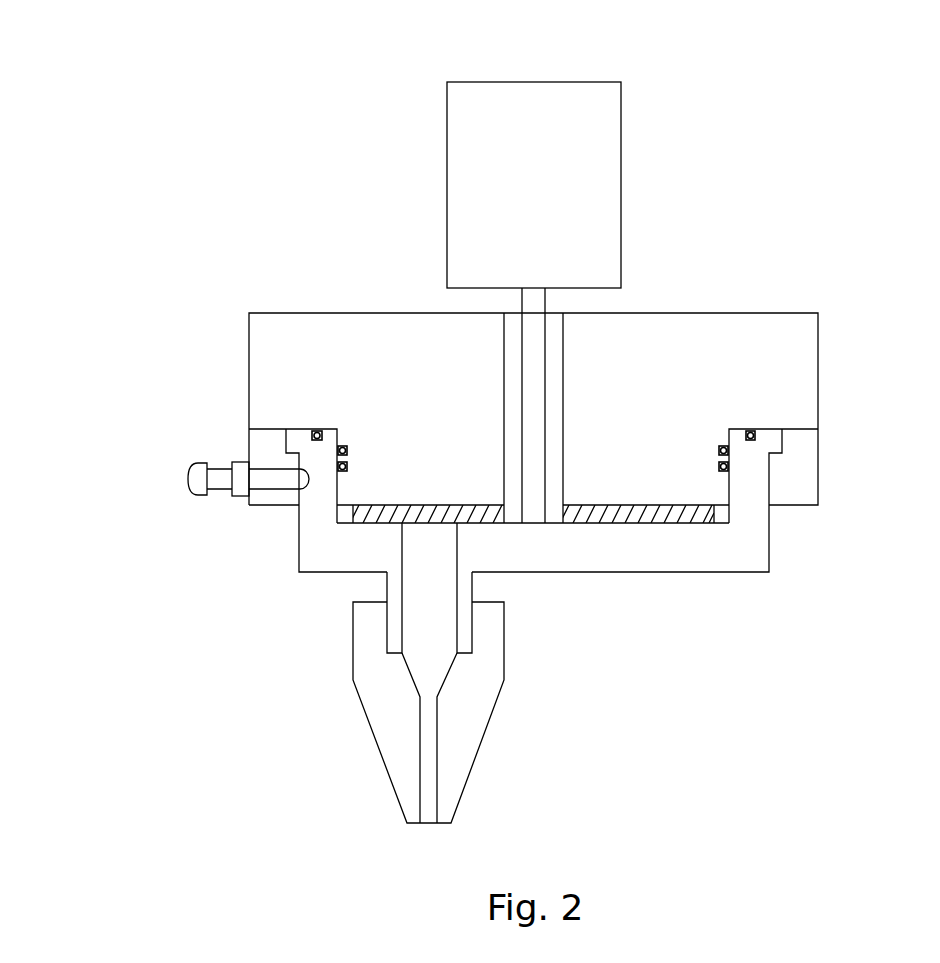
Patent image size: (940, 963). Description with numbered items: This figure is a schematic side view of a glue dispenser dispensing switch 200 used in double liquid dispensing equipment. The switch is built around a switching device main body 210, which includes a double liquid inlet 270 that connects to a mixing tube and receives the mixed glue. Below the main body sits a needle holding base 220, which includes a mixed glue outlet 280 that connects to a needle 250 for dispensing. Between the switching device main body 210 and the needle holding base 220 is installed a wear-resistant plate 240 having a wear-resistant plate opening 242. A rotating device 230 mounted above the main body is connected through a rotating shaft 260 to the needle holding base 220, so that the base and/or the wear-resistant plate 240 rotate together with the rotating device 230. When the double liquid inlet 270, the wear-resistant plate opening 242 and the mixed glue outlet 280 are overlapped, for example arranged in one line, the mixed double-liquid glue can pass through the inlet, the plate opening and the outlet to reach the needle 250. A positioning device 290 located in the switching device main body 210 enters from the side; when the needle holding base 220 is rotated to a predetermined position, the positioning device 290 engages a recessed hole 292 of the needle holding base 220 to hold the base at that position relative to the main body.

The glue dispenser dispensing switch 200 is at (280, 57).
The switching device main body 210 is at (818, 347).
The needle holding base 220 is at (769, 550).
The rotating device 230 is at (621, 153).
The wear-resistant plate 240 is at (675, 515).
The wear-resistant plate opening 242 is at (552, 513).
The needle 250 is at (505, 655).
The rotating shaft 260 is at (536, 302).
The double liquid inlet 270 is at (504, 352).
The mixed glue outlet 280 is at (413, 545).
The positioning device 290 is at (188, 472).
The recessed hole 292 is at (305, 481).